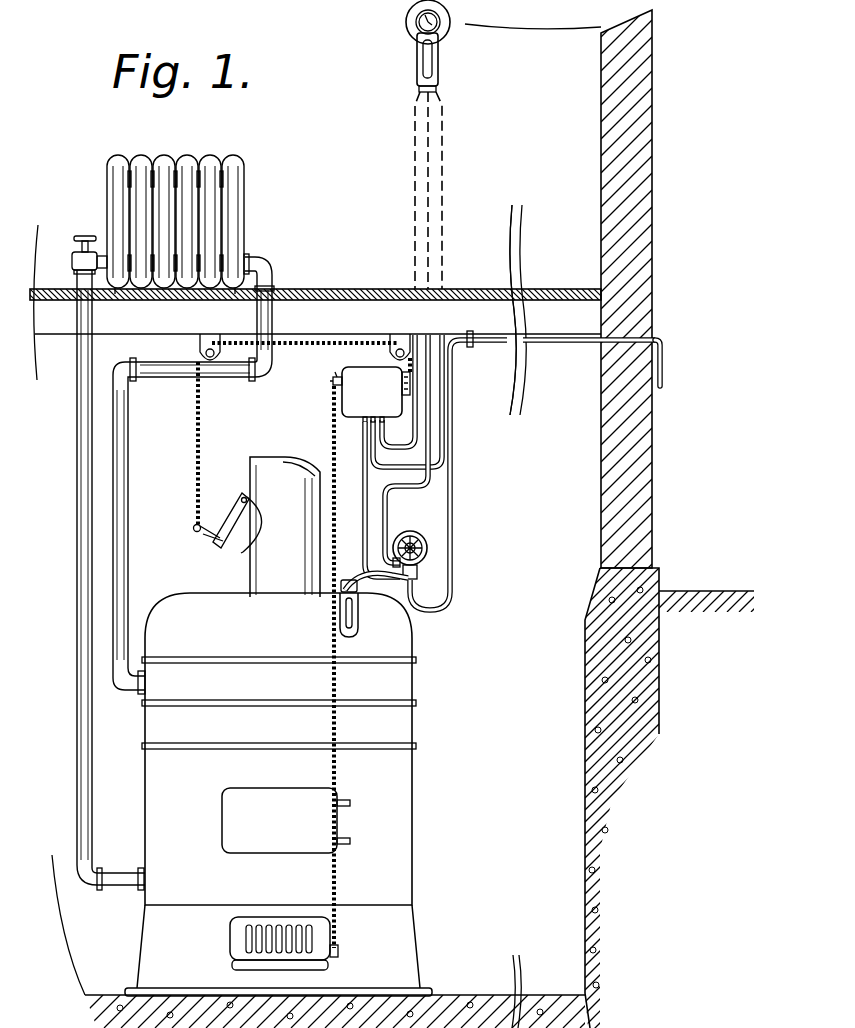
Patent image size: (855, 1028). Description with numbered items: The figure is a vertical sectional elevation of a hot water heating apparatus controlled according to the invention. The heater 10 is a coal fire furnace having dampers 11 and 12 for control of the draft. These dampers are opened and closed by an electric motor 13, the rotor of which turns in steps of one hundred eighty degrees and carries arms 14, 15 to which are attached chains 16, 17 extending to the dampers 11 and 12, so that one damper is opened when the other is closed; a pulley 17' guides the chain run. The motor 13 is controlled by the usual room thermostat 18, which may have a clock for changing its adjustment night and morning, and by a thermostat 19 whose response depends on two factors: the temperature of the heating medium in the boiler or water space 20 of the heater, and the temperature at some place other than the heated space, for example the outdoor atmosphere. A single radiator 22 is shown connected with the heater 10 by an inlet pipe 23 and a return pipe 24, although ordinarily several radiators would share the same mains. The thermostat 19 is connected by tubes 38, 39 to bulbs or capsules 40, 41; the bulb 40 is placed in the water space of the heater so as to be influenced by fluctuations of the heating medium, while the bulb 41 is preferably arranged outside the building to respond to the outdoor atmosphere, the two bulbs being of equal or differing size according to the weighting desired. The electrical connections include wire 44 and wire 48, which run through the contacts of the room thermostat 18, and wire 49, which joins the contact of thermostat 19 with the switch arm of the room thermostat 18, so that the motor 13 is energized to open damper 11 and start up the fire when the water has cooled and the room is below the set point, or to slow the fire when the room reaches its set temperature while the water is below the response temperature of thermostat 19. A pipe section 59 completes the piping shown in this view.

The heater 10 is at (400, 822).
The damper 11 is at (339, 951).
The damper 12 is at (218, 532).
The electric motor 13 is at (348, 412).
The arm 14 is at (336, 378).
The arm 15 is at (411, 387).
The chain 16 is at (340, 743).
The chain 17 is at (296, 433).
The pulley 17' is at (382, 355).
The room thermostat 18 is at (413, 74).
The thermostat 19 is at (436, 553).
The water space 20 is at (372, 630).
The radiator 22 is at (239, 228).
The inlet pipe 23 is at (77, 418).
The return pipe 24 is at (272, 288).
The tube 38 is at (342, 578).
The tube 39 is at (455, 596).
The bulb 40 is at (346, 615).
The bulb 41 is at (663, 378).
The wire 44 is at (414, 213).
The wire 48 is at (443, 183).
The wire 49 is at (432, 145).
The pipe section 59 is at (500, 345).